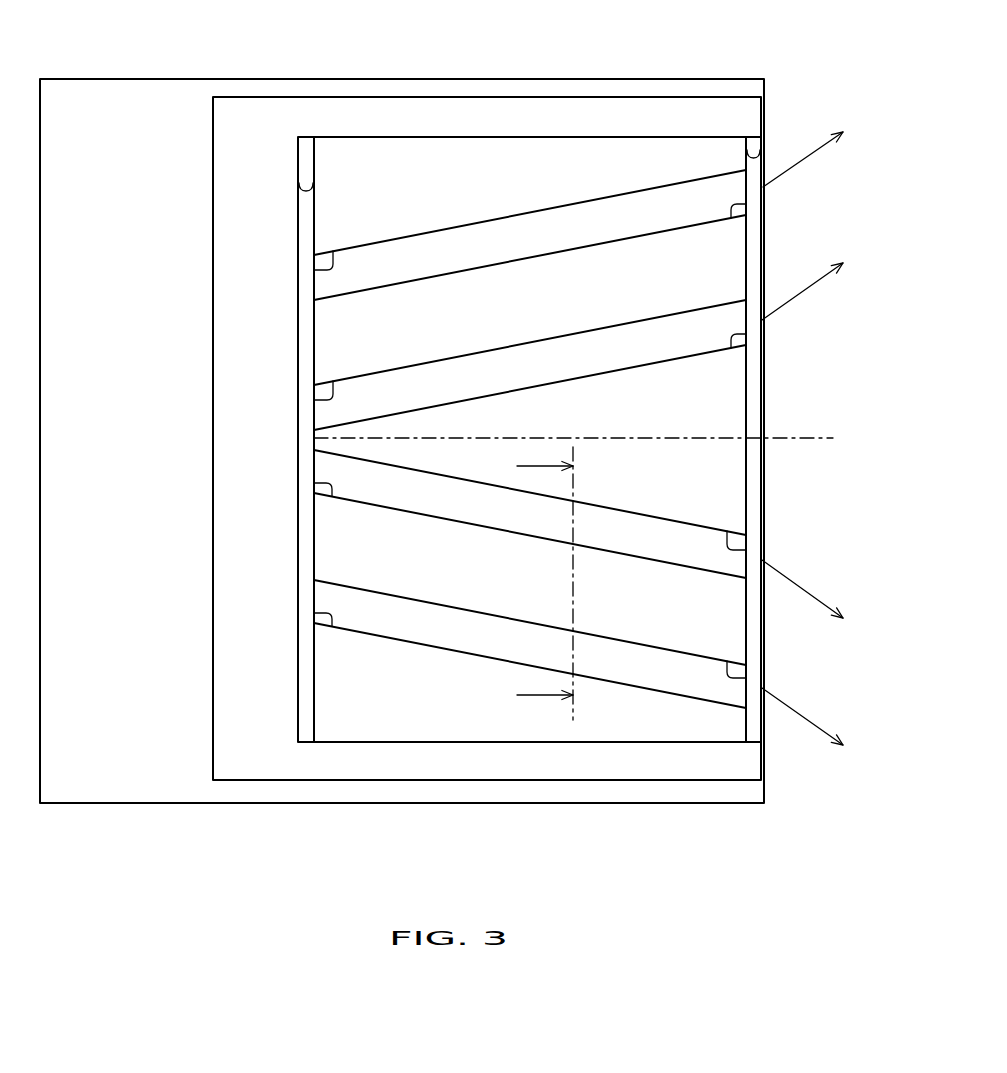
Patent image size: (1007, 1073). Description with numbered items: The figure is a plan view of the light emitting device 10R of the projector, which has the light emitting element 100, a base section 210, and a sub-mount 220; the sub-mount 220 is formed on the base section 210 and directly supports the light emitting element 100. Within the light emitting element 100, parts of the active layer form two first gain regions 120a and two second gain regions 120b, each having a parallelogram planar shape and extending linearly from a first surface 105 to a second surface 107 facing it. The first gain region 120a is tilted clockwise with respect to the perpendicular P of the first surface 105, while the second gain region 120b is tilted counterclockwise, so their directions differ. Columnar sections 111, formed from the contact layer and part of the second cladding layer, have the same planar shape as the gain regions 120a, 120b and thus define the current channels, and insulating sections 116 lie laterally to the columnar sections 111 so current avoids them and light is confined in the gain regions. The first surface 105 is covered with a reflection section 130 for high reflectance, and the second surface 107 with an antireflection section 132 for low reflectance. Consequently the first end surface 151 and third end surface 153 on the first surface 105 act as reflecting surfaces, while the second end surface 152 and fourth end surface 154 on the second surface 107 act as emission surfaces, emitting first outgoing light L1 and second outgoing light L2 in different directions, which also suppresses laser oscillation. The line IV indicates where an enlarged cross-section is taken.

The light emitting device 10R is at (795, 67).
The light emitting element 100 is at (597, 73).
The first surface 105 is at (313, 187).
The second surface 107 is at (762, 160).
The columnar section 111 is at (530, 428).
The insulating section 116 is at (418, 199).
The first gain region 120a is at (530, 579).
The second gain region 120b is at (530, 300).
The reflection section 130 is at (307, 153).
The antireflection section 132 is at (750, 152).
The first end surface 151 is at (330, 492).
The second end surface 152 is at (727, 533).
The third end surface 153 is at (330, 254).
The fourth end surface 154 is at (731, 210).
The base section 210 is at (153, 97).
The sub-mount 220 is at (370, 115).
The first outgoing light L1 is at (810, 593).
The second outgoing light L2 is at (813, 158).
The perpendicular P is at (583, 438).
The line IV- IV is at (533, 583).